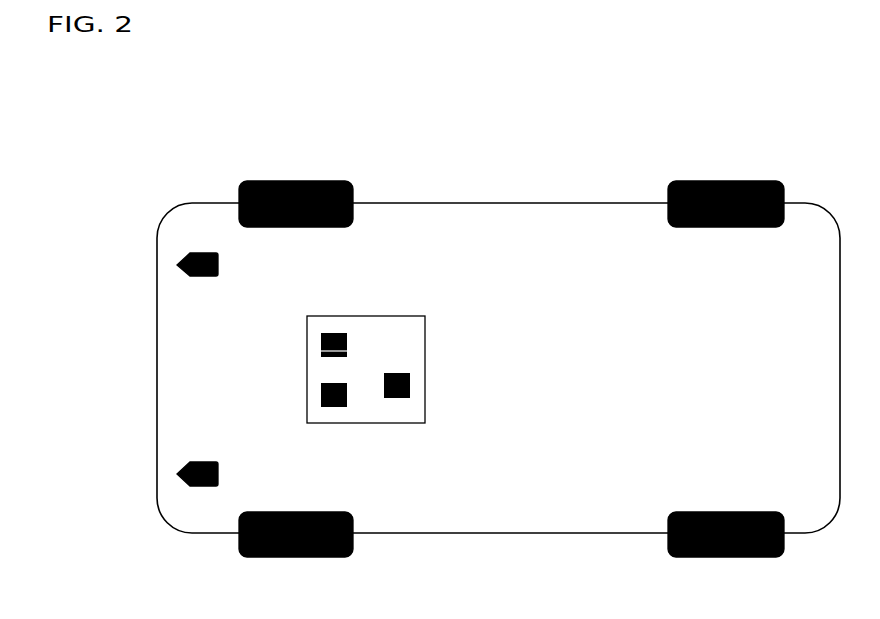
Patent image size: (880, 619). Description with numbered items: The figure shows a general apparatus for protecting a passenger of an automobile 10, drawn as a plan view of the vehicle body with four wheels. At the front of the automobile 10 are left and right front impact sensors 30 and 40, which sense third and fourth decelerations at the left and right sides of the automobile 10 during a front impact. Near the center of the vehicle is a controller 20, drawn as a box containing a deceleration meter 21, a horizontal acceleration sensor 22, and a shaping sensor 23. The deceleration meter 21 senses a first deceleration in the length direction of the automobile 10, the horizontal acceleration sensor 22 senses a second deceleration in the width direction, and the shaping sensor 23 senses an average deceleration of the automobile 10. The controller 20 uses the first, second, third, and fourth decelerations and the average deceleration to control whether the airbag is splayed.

The automobile 10 is at (512, 203).
The controller 20 is at (392, 423).
The deceleration meter 21 is at (333, 333).
The horizontal acceleration sensor 22 is at (410, 383).
The shaping sensor 23 is at (335, 407).
The left front impact sensor 30 is at (178, 473).
The right front impact sensor 40 is at (178, 265).